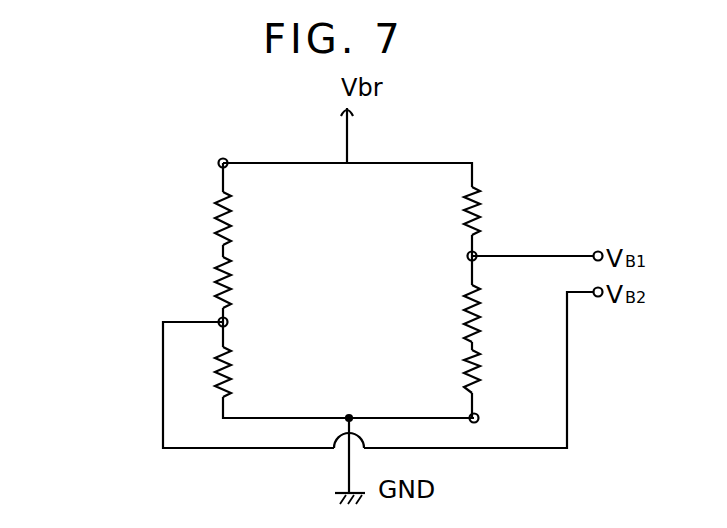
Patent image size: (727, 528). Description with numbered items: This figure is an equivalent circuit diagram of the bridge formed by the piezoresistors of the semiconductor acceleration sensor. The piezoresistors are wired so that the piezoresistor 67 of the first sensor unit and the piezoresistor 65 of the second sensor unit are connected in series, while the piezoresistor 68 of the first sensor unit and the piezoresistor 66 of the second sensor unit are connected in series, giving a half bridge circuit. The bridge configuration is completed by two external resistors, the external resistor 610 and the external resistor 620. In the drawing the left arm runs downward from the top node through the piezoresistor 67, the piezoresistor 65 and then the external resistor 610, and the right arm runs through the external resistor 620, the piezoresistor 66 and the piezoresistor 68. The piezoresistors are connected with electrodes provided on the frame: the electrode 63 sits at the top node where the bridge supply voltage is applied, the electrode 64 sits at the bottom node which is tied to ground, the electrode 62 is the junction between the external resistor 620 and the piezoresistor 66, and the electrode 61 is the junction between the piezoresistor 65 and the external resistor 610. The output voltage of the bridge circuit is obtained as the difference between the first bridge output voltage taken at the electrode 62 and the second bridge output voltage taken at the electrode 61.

The electrode 63 is at (217, 162).
The piezoresistor 67 is at (231, 214).
The piezoresistor 65 is at (232, 286).
The electrode 61 is at (229, 322).
The external resistor 610 is at (232, 386).
The external resistor 620 is at (481, 213).
The electrode 62 is at (467, 256).
The piezoresistor 66 is at (465, 319).
The piezoresistor 68 is at (465, 369).
The electrode 64 is at (479, 421).